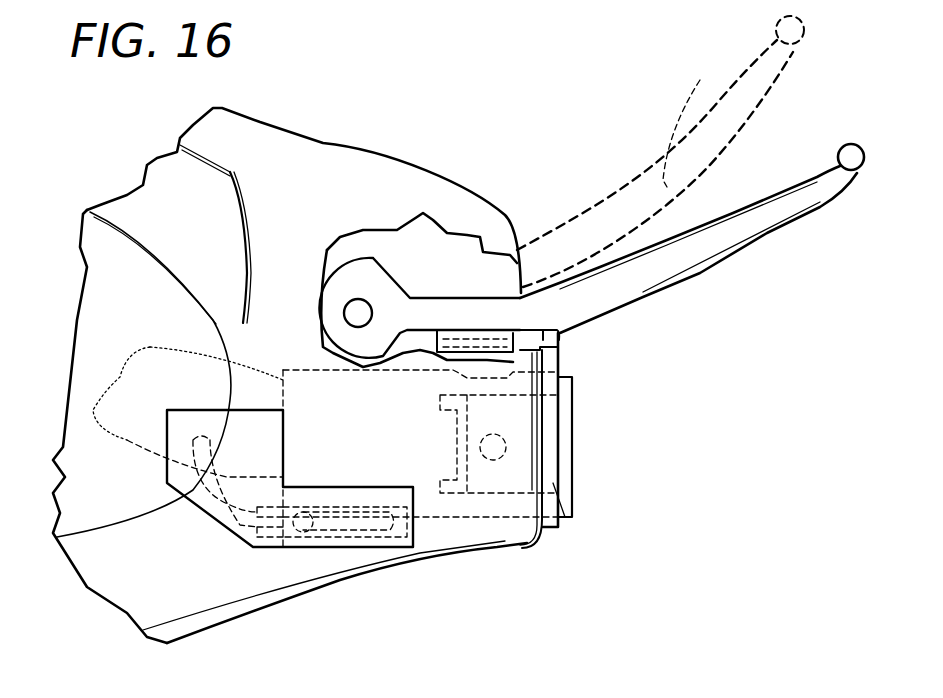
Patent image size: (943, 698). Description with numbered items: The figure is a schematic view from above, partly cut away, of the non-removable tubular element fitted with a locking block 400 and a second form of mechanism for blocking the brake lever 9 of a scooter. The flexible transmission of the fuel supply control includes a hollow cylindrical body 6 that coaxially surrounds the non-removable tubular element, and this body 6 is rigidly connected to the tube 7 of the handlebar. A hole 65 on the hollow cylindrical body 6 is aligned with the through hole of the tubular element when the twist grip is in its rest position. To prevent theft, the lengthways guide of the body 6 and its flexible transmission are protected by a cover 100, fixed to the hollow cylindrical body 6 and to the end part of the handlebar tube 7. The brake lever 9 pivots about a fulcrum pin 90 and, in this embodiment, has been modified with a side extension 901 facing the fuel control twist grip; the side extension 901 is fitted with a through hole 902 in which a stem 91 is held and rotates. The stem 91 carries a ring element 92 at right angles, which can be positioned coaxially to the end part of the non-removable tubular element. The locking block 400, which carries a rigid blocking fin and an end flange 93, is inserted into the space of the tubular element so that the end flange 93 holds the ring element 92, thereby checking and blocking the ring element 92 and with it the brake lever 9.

The handlebar tube 7 is at (163, 383).
The fulcrum pin 90 is at (355, 315).
The side extension 901 is at (453, 347).
The through hole 902 is at (483, 345).
The brake lever 9 is at (738, 240).
The hole 65 is at (545, 342).
The stem 91 is at (553, 353).
The locking block 400 is at (500, 418).
The end flange 93 is at (561, 473).
The ring element 92 is at (570, 520).
The cover 100 is at (280, 540).
The hollow cylindrical body 6 is at (400, 443).